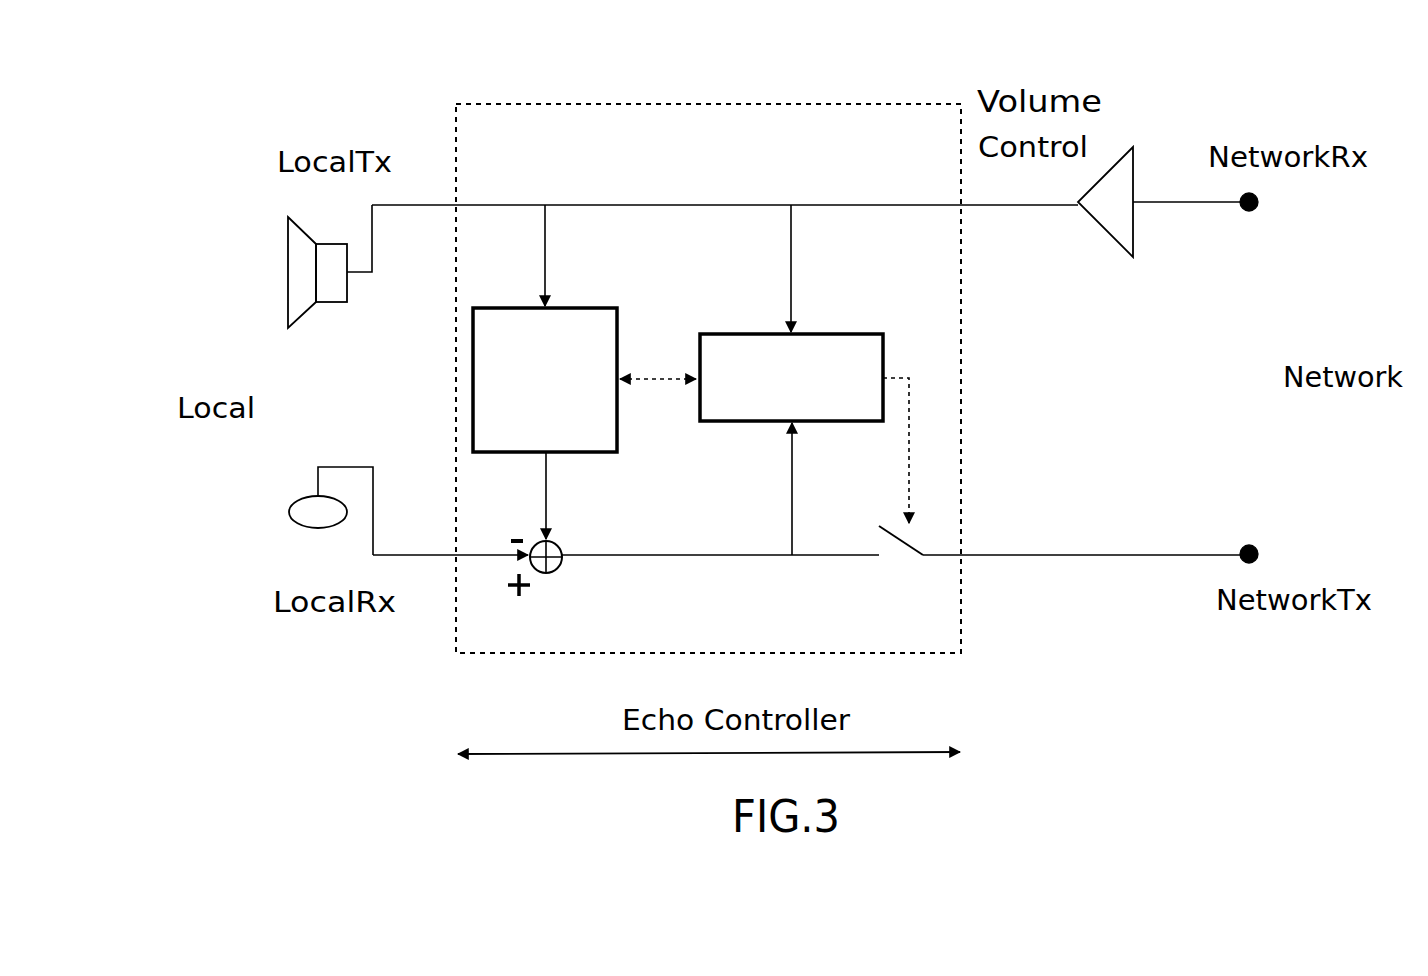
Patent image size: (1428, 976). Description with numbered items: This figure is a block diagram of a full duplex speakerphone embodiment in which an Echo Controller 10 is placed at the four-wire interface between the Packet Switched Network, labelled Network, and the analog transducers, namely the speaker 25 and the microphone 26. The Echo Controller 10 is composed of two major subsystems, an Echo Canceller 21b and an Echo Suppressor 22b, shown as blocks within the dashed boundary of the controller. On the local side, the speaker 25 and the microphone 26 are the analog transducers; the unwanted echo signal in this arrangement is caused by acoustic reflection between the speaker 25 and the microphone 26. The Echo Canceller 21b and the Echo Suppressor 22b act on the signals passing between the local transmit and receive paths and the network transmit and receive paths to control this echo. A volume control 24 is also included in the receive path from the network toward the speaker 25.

The Echo Controller 10 is at (823, 634).
The Echo Canceller 21b is at (597, 325).
The Echo Suppressor 22b is at (848, 353).
The volume control 24 is at (1126, 150).
The speaker 25 is at (298, 299).
The microphone 26 is at (296, 513).